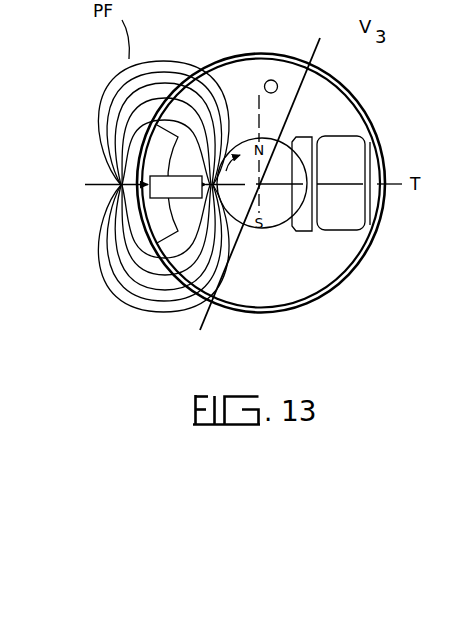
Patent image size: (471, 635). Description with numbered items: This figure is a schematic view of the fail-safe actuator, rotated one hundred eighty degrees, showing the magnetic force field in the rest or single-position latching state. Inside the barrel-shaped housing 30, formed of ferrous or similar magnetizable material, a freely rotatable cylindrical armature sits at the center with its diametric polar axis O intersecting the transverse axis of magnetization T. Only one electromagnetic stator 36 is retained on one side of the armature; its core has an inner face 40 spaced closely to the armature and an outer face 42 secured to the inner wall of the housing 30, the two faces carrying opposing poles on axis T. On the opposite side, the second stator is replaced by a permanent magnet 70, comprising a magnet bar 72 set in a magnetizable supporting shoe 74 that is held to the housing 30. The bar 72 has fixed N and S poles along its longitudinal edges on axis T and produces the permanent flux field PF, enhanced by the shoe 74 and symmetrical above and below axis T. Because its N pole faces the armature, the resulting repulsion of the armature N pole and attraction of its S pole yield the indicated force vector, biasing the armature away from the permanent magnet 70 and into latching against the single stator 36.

The barrel-shaped housing 30 is at (298, 312).
The electromagnetic stator 36 is at (341, 218).
The inner face 40 is at (303, 232).
The outer face 42 is at (381, 212).
The permanent magnet 70 is at (150, 202).
The magnet bar 72 is at (125, 169).
The supporting shoe 74 is at (163, 236).